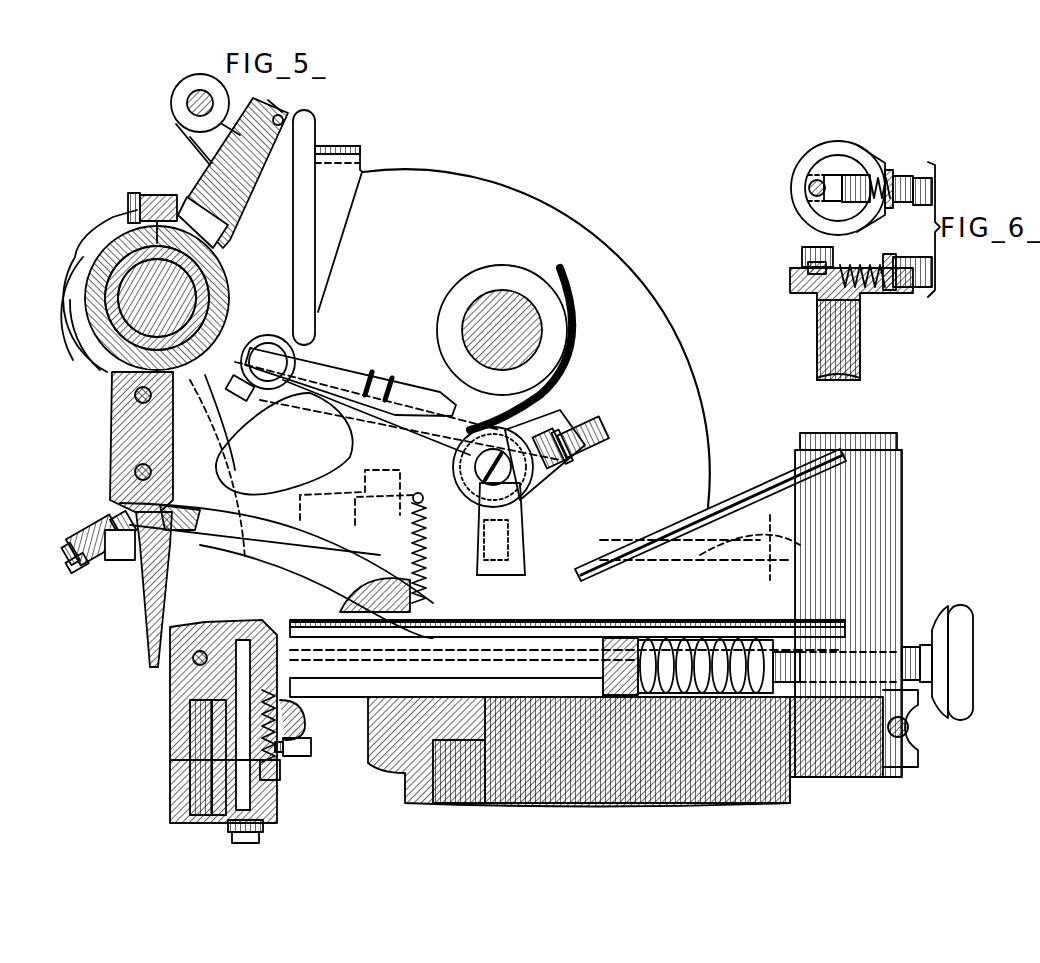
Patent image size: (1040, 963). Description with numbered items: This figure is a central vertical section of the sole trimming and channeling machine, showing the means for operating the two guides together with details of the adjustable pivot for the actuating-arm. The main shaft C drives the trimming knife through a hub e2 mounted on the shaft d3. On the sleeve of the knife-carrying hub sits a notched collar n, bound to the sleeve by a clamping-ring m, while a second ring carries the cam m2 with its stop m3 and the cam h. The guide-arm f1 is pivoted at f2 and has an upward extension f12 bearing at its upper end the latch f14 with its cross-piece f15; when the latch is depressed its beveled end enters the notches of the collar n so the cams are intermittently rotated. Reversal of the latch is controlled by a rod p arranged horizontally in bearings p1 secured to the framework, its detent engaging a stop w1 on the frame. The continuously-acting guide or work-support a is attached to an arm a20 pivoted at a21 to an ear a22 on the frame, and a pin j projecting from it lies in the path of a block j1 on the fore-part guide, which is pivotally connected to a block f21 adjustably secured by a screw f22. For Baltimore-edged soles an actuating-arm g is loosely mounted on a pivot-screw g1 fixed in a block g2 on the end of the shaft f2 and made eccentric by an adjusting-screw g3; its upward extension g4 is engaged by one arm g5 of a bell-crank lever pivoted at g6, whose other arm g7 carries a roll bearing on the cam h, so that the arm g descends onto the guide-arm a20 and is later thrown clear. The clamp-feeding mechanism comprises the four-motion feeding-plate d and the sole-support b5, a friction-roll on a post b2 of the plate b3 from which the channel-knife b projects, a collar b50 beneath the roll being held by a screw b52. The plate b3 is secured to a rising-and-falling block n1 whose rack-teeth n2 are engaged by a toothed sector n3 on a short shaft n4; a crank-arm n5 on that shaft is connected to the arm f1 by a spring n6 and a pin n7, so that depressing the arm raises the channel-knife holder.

In FIG. 5, the rod p is at (190, 98).
In FIG. 5, the bearings p1 is at (212, 133).
In FIG. 5, the stop w1 is at (196, 146).
In FIG. 5, the upward extension f12 is at (255, 170).
In FIG. 5, the latch f14 is at (272, 102).
In FIG. 5, the cross-piece f15 is at (288, 115).
In FIG. 5, the bell-crank lever arm g7 is at (298, 225).
In FIG. 5, the rising-and-falling block n1 is at (182, 205).
In FIG. 5, the stop m3 is at (85, 246).
In FIG. 5, the clamping-ring m is at (90, 282).
In FIG. 5, the hub e2 is at (108, 300).
In FIG. 5, the cam h is at (80, 327).
In FIG. 5, the shaft d3 is at (157, 298).
In FIG. 5, the notched collar n is at (108, 360).
In FIG. 5, the cam m2 is at (188, 378).
In FIG. 5, the bell-crank pivot g6 is at (270, 380).
In FIG. 5, the bell-crank lever arm g5 is at (365, 370).
In FIG. 5, the upward extension g4 is at (420, 430).
In FIG. 5, the guide-arm f1 is at (292, 490).
In FIG. 5, the main shaft C is at (482, 312).
In FIG. 5, the pivot-screw g1 is at (490, 460).
In FIG. 6, the pivot-screw g1 is at (812, 188).
In FIG. 5, the block g2 is at (545, 470).
In FIG. 6, the block g2 is at (808, 195).
In FIG. 5, the adjusting-screw g3 is at (600, 438).
In FIG. 6, the adjusting-screw g3 is at (920, 175).
In FIG. 5, the pin n7 is at (505, 540).
In FIG. 5, the actuating-arm g is at (477, 555).
In FIG. 5, the spring n6 is at (410, 538).
In FIG. 5, the guide-arm a20 is at (330, 570).
In FIG. 5, the pivot a21 is at (740, 635).
In FIG. 5, the ear a22 is at (790, 600).
In FIG. 5, the block j1 is at (100, 520).
In FIG. 5, the screw f22 is at (72, 548).
In FIG. 5, the block f21 is at (95, 570).
In FIG. 5, the pin j is at (130, 568).
In FIG. 5, the feeding-plate d is at (164, 585).
In FIG. 5, the channel-knife b is at (185, 650).
In FIG. 5, the plate b3 is at (215, 640).
In FIG. 5, the crank-arm n5 is at (300, 640).
In FIG. 5, the guide or work-support a is at (152, 668).
In FIG. 5, the sole-support b5 is at (182, 690).
In FIG. 5, the post b2 is at (185, 720).
In FIG. 5, the short shaft n4 is at (308, 715).
In FIG. 5, the toothed sector n3 is at (312, 745).
In FIG. 5, the rack-teeth n2 is at (280, 765).
In FIG. 5, the collar b50 is at (185, 796).
In FIG. 5, the screw b52 is at (262, 830).
In FIG. 6, the pivot shaft f2 is at (860, 322).